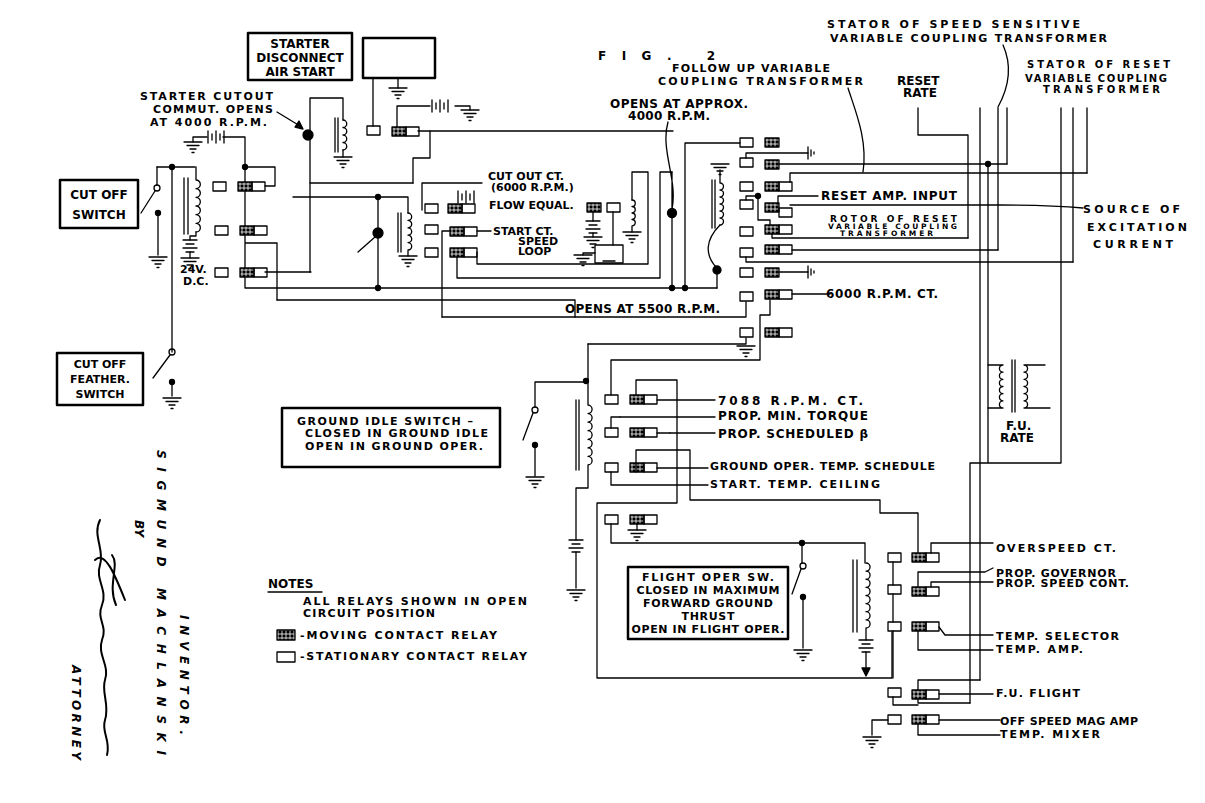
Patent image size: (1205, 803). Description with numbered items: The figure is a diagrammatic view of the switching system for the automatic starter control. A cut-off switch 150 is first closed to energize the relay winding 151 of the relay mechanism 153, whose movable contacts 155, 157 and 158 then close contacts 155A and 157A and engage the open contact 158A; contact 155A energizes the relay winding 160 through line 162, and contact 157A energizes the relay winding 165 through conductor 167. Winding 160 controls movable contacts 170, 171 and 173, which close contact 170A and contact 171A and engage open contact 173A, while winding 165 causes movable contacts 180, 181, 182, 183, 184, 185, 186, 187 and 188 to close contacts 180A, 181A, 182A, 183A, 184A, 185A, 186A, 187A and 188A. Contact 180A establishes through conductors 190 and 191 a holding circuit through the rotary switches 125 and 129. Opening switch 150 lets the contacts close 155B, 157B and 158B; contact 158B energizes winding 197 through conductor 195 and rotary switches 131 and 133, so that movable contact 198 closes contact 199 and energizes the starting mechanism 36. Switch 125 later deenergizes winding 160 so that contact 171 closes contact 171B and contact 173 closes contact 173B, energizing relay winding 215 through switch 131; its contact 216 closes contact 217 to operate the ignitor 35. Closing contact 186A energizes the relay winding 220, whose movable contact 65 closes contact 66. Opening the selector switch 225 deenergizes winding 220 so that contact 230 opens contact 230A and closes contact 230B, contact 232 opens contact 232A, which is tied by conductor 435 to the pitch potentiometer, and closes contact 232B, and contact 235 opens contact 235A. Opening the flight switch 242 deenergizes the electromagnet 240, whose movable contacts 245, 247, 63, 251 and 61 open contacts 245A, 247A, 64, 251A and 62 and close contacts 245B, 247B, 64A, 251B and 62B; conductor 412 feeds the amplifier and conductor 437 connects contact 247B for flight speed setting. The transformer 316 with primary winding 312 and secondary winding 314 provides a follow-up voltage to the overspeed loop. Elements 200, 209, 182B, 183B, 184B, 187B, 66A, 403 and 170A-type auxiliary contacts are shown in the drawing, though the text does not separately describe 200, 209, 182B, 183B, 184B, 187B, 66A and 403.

The starting mechanism 36 is at (390, 54).
The cut-off switch 150 is at (155, 184).
The relay winding 151 is at (202, 207).
The relay mechanism 153 is at (224, 292).
The contact 155A is at (214, 181).
The movable contact 155 is at (239, 182).
The contact 155B is at (262, 181).
The contact 157A is at (216, 236).
The movable contact 157 is at (249, 228).
The contact 157B is at (279, 229).
The open contact 158A is at (218, 279).
The movable contact 158 is at (246, 268).
The contact 158B is at (268, 269).
The rotary switch 133 is at (303, 137).
The conductor 195 is at (318, 184).
The electromagnetic winding 197 is at (352, 147).
The contact 199 is at (370, 125).
The movable contact 198 is at (407, 128).
The conductor 190 is at (570, 130).
The line 162 is at (325, 198).
The rotary switch 125 is at (352, 242).
The relay winding 160 is at (398, 240).
The conductor 167 is at (344, 301).
The cut out circuit 200 is at (443, 182).
The contact 170A is at (440, 198).
The movable contact 170 is at (456, 204).
The contact 171A is at (442, 223).
The movable contact 171 is at (457, 236).
The contact 171B is at (477, 226).
The start circuit conductor 209 is at (484, 235).
The open contact 173A is at (431, 258).
The movable contact 173 is at (460, 257).
The contact 173B is at (480, 257).
The rotary switch 131 is at (677, 208).
The conductor 191 is at (692, 146).
The relay winding 165 is at (716, 182).
The rotary switch 129 is at (728, 256).
The contact 180A is at (748, 137).
The movable contact 180 is at (779, 138).
The contact 181A is at (741, 162).
The movable contact 181 is at (779, 160).
The contact 182A is at (737, 180).
The movable contact 182 is at (779, 183).
The stationary contact 182B is at (815, 184).
The contact 183A is at (742, 211).
The movable contact 183 is at (780, 205).
The stationary contact 183B is at (792, 214).
The contact 184A is at (738, 231).
The movable contact 184 is at (779, 235).
The stationary contact 184B is at (792, 230).
The contact 185A is at (744, 250).
The movable contact 185 is at (795, 256).
The contact 186A is at (744, 278).
The movable contact 186 is at (777, 278).
The contact 187A is at (611, 304).
The movable contact 187 is at (773, 301).
The stationary contact 187B is at (785, 300).
The contact 188A is at (740, 333).
The movable contact 188 is at (772, 338).
The relay winding 215 is at (628, 192).
The movable contact 216 is at (594, 217).
The contact 217 is at (614, 215).
The ignitor 35 is at (598, 255).
The relay winding 220 is at (582, 405).
The selector switch 225 is at (527, 425).
The contact 230A is at (612, 394).
The movable contact 230 is at (638, 396).
The contact 230B is at (658, 397).
The contact 232A is at (609, 420).
The movable contact 232 is at (639, 429).
The contact 232B is at (660, 436).
The conductor 435 is at (690, 406).
The prop scheduled beta conductor 403 is at (686, 436).
The contact 66 is at (611, 462).
The movable contact 65 is at (636, 462).
The stationary contact 66A is at (655, 461).
The contact 235A is at (734, 539).
The movable contact 235 is at (644, 514).
The flight operation switch 242 is at (800, 562).
The electromagnet 240 is at (853, 590).
The contact 245A is at (890, 552).
The movable contact 245 is at (918, 552).
The contact 245B is at (938, 564).
The conductor 412 is at (969, 569).
The contact 247A is at (893, 597).
The movable contact 247 is at (918, 597).
The contact 247B is at (939, 592).
The conductor 437 is at (988, 583).
The contact 64 is at (895, 632).
The movable contact 63 is at (920, 632).
The contact 64A is at (940, 625).
The contact 251A is at (888, 692).
The movable contact 251 is at (916, 690).
The contact 251B is at (937, 699).
The contact 62 is at (893, 725).
The movable contact 61 is at (922, 714).
The contact 62B is at (930, 725).
The secondary winding 314 is at (1003, 363).
The transformer 316 is at (1014, 361).
The primary winding 312 is at (1028, 383).